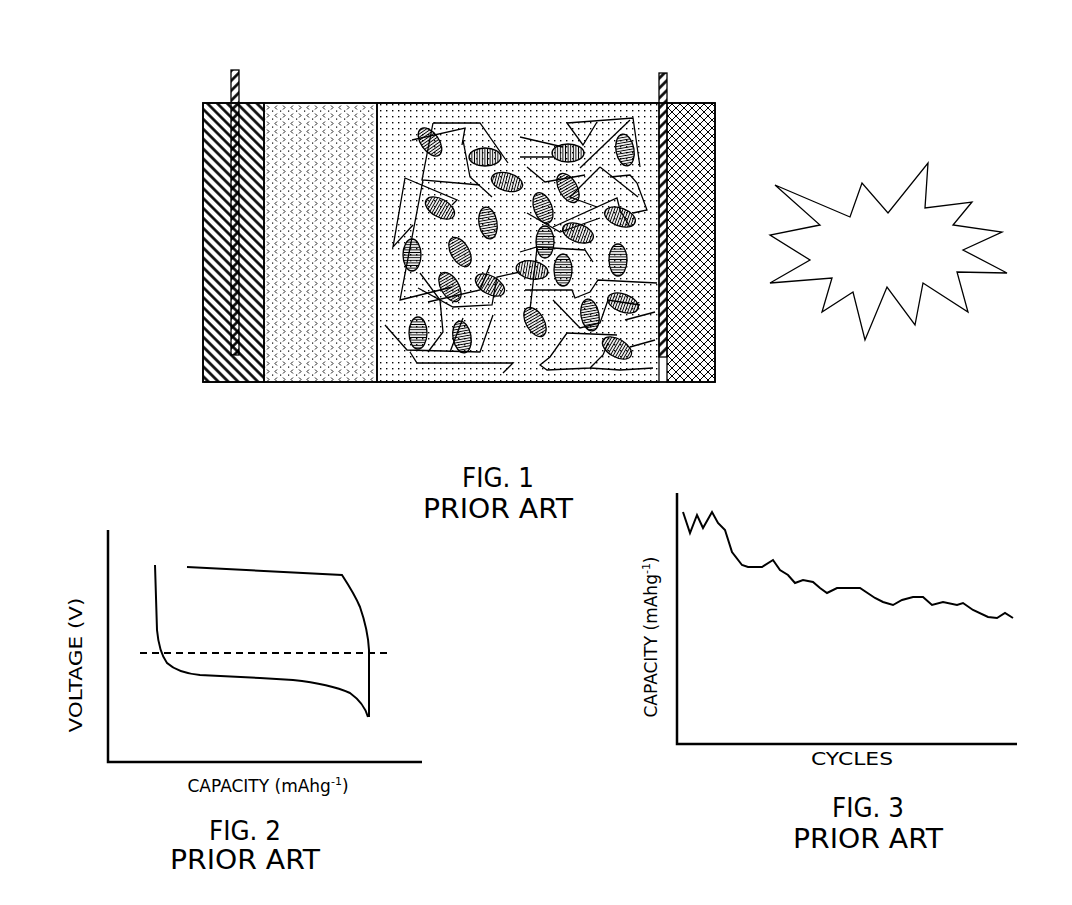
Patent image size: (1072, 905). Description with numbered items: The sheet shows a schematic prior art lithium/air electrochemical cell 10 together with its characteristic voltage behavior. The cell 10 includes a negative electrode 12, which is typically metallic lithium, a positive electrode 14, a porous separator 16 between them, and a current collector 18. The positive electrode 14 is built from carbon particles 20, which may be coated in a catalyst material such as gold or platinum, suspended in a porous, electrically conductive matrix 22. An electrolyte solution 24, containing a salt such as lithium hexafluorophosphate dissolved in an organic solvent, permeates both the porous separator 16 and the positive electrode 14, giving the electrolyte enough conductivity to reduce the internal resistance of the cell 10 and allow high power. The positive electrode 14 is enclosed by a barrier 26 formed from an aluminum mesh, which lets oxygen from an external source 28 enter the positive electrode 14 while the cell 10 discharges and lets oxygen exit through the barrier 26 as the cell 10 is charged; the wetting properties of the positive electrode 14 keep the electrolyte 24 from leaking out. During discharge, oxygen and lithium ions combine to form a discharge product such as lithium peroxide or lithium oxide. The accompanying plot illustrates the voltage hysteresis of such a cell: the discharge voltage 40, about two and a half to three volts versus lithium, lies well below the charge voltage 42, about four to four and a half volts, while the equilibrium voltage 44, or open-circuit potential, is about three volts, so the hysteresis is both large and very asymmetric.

In FIG. 1, the electrochemical cell 10 is at (395, 241).
In FIG. 1, the negative electrode 12 is at (203, 198).
In FIG. 1, the positive electrode 14 is at (615, 382).
In FIG. 1, the porous separator 16 is at (305, 382).
In FIG. 1, the current collector 18 is at (667, 91).
In FIG. 1, the carbon particles 20 is at (420, 130).
In FIG. 1, the porous, electrically conductive matrix 22 is at (498, 148).
In FIG. 1, the electrolyte solution 24 is at (512, 382).
In FIG. 1, the barrier 26 is at (715, 118).
In FIG. 1, the external source 28 is at (923, 172).
In FIG. 2, the discharge voltage 40 is at (263, 680).
In FIG. 2, the charge voltage 42 is at (358, 605).
In FIG. 2, the equilibrium voltage 44 is at (190, 652).